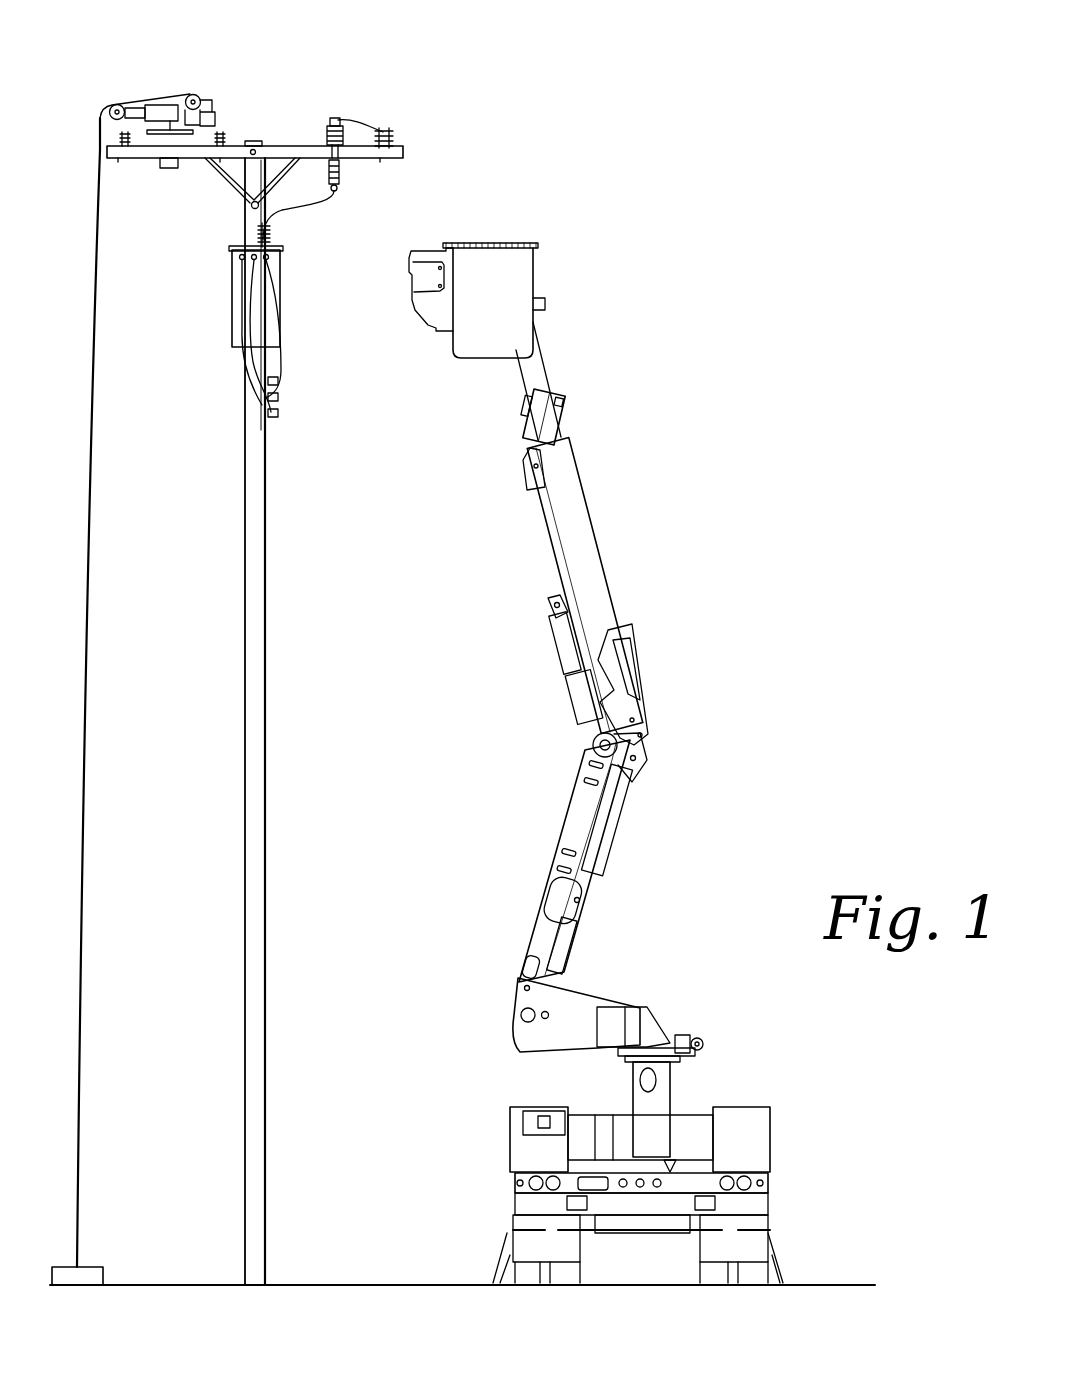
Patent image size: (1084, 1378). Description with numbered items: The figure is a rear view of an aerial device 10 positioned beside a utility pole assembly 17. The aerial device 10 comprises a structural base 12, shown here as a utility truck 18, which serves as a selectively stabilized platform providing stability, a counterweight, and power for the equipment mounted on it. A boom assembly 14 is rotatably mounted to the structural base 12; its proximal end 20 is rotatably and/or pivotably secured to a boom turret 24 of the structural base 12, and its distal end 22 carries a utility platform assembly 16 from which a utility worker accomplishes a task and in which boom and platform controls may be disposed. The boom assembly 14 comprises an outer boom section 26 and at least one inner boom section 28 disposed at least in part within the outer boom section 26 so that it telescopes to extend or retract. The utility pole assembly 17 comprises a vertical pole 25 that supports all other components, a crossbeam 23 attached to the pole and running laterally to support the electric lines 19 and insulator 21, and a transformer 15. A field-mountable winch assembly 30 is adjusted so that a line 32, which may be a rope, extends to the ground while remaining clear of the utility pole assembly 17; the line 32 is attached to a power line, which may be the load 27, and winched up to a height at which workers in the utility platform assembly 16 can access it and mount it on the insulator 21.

The aerial device 10 is at (650, 309).
The structural base 12 is at (808, 1103).
The boom assembly 14 is at (694, 681).
The transformer 15 is at (266, 301).
The utility platform assembly 16 is at (540, 214).
The utility pole assembly 17 is at (266, 589).
The utility truck 18 is at (770, 1160).
The electric lines 19 is at (377, 131).
The proximal end 20 is at (533, 922).
The insulator 21 is at (387, 133).
The distal end 22 is at (541, 348).
The crossbeam 23 is at (405, 153).
The boom turret 24 is at (587, 998).
The vertical pole 25 is at (254, 699).
The outer boom section 26 is at (572, 485).
The load 27 is at (105, 1268).
The inner boom section 28 is at (520, 385).
The field-mountable winch assembly 30 is at (130, 72).
The line 32 is at (93, 372).